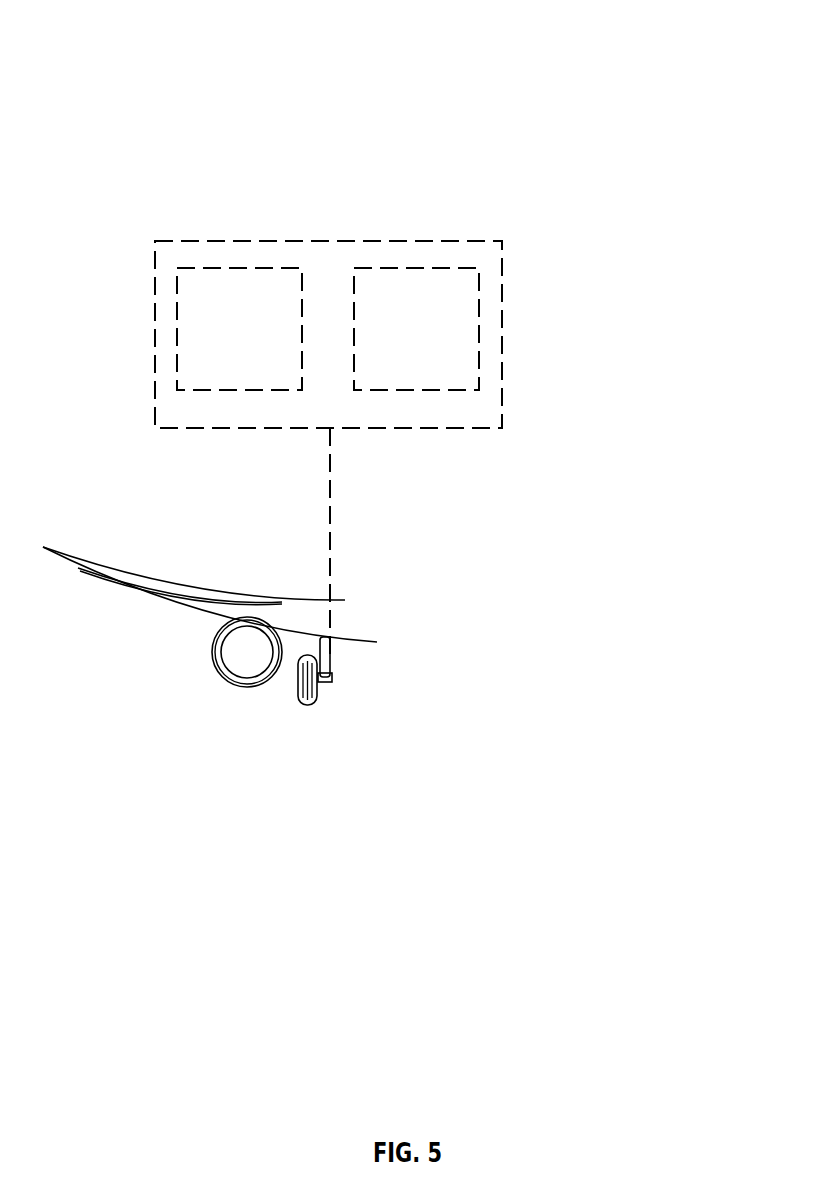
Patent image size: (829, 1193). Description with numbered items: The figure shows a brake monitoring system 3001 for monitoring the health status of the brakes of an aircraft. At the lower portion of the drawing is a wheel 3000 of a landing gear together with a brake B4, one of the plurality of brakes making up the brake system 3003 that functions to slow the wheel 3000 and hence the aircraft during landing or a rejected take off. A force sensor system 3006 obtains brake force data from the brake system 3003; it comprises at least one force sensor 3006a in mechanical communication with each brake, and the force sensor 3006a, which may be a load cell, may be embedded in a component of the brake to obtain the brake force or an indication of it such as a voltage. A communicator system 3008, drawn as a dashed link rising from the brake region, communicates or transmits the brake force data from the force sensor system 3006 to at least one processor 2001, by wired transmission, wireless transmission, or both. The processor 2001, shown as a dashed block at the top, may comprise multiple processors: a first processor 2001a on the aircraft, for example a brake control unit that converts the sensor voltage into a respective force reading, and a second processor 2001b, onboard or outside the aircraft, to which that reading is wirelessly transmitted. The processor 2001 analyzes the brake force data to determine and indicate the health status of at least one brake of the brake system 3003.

The brake monitoring system 3001 is at (575, 72).
The processor 2001 is at (502, 340).
The first processor 2001a is at (243, 315).
The second processor 2001b is at (418, 315).
The communicator system 3008 is at (330, 530).
The brake system 3003 is at (362, 705).
The wheel 3000 is at (297, 681).
The force sensor system 3006 is at (337, 672).
The force sensor 3006a is at (333, 677).
The brake B4 is at (322, 690).